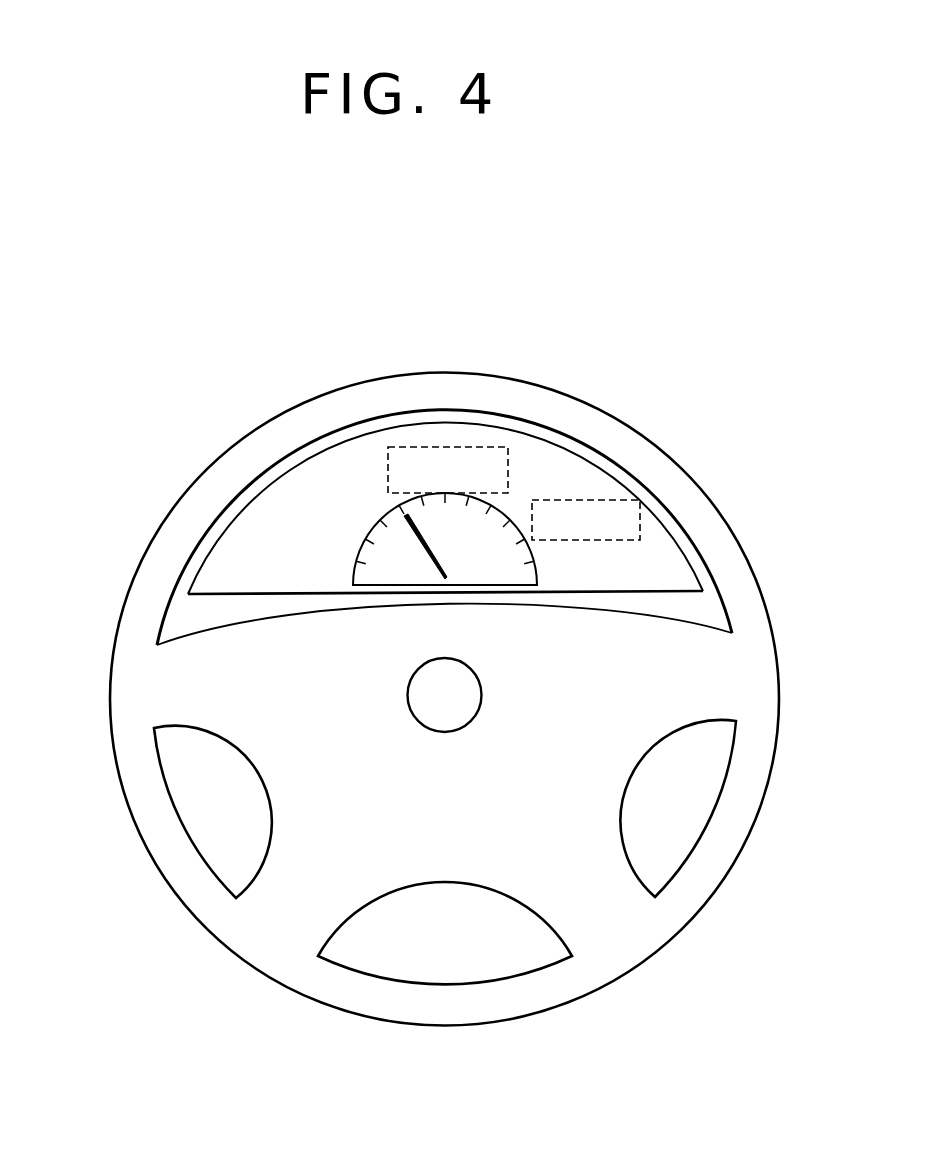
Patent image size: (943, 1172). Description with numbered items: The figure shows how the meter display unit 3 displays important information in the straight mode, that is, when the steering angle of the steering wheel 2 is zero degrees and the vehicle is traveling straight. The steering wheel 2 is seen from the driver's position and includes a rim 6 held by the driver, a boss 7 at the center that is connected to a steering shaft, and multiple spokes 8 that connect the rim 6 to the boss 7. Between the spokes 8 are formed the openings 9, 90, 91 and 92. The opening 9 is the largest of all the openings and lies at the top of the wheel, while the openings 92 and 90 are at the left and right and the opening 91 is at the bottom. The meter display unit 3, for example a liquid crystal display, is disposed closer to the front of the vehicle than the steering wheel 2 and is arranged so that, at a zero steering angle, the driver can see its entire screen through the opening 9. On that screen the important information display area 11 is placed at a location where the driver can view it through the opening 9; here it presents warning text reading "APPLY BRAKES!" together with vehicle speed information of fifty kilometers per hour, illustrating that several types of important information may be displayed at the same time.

The steering wheel 2 is at (572, 396).
The meter display unit 3 is at (291, 512).
The rim 6 is at (195, 507).
The boss 7 is at (463, 707).
The spokes 8 is at (175, 683).
The opening 9 is at (710, 610).
The important information display area 11 is at (442, 446).
The opening 90 is at (690, 790).
The opening 91 is at (445, 957).
The opening 92 is at (215, 802).